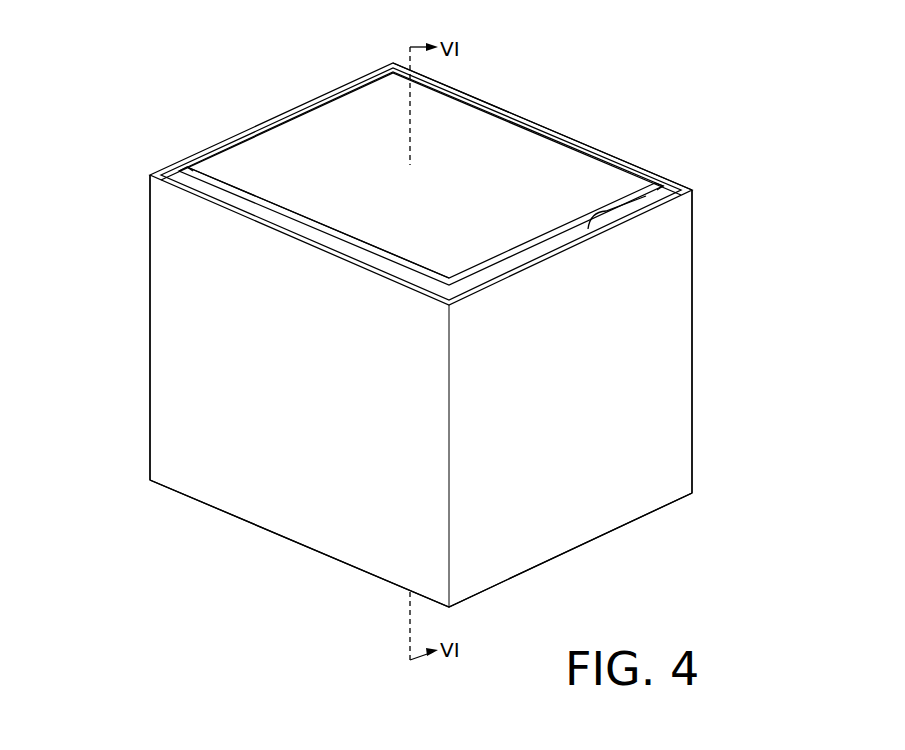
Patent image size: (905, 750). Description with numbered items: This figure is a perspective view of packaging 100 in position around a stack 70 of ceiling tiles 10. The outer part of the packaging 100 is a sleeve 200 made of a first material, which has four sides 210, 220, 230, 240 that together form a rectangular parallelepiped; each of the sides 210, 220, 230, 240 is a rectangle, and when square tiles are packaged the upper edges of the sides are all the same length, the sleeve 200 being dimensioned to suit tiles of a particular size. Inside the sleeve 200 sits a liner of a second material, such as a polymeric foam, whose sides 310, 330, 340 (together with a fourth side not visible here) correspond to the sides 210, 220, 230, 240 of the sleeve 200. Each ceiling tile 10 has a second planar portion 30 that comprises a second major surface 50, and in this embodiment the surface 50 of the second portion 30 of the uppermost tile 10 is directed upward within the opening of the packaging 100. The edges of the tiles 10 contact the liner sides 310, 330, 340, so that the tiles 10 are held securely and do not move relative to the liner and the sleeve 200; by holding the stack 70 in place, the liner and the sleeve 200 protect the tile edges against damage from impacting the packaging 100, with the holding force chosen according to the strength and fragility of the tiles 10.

The packaging 100 is at (116, 106).
The sleeve 200 is at (637, 382).
The side 210 is at (602, 423).
The side 220 is at (232, 333).
The side 230 is at (230, 138).
The side 240 is at (640, 165).
The ceiling tile 10 is at (567, 157).
The second major surface 50 is at (352, 117).
The stack 70 is at (488, 137).
The second planar portion 30 is at (246, 203).
The side 310 is at (640, 212).
The side 330 is at (184, 166).
The side 340 is at (657, 183).